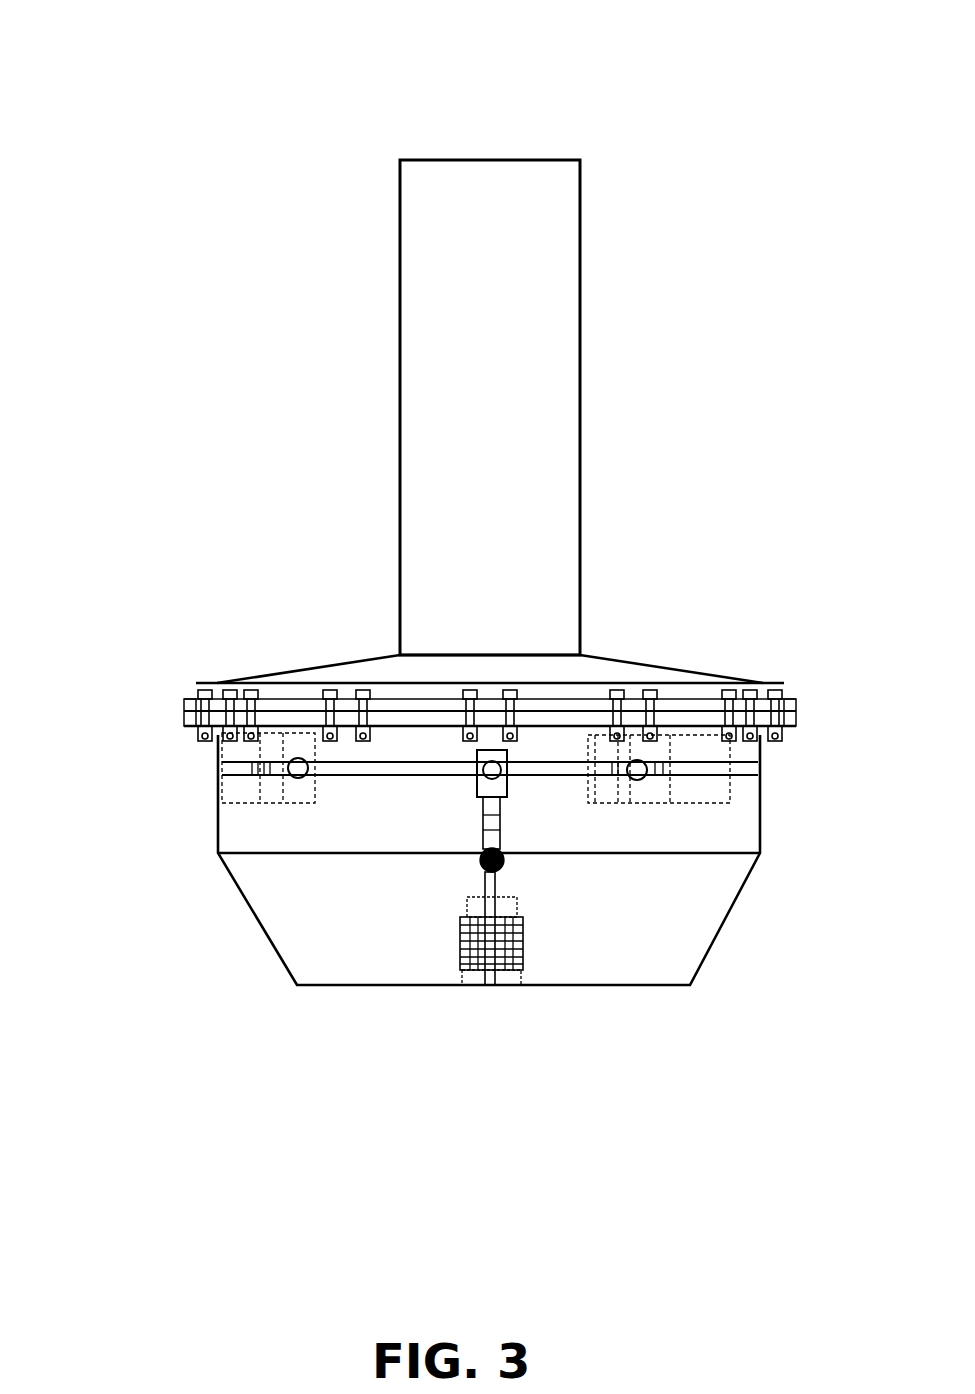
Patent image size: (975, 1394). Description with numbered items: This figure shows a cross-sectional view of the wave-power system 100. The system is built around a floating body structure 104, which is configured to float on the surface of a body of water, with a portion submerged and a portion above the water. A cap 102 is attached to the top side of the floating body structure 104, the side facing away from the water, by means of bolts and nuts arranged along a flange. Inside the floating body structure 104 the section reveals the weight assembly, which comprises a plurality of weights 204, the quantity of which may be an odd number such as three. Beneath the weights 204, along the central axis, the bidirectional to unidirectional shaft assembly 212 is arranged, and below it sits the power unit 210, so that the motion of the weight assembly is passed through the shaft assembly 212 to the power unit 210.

The wave-power system 100 is at (128, 40).
The cap 102 is at (545, 459).
The floating body structure 104 is at (262, 940).
The plurality of weights 204 is at (245, 789).
The power unit 210 is at (487, 973).
The bidirectional to unidirectional shaft assembly 212 is at (497, 857).